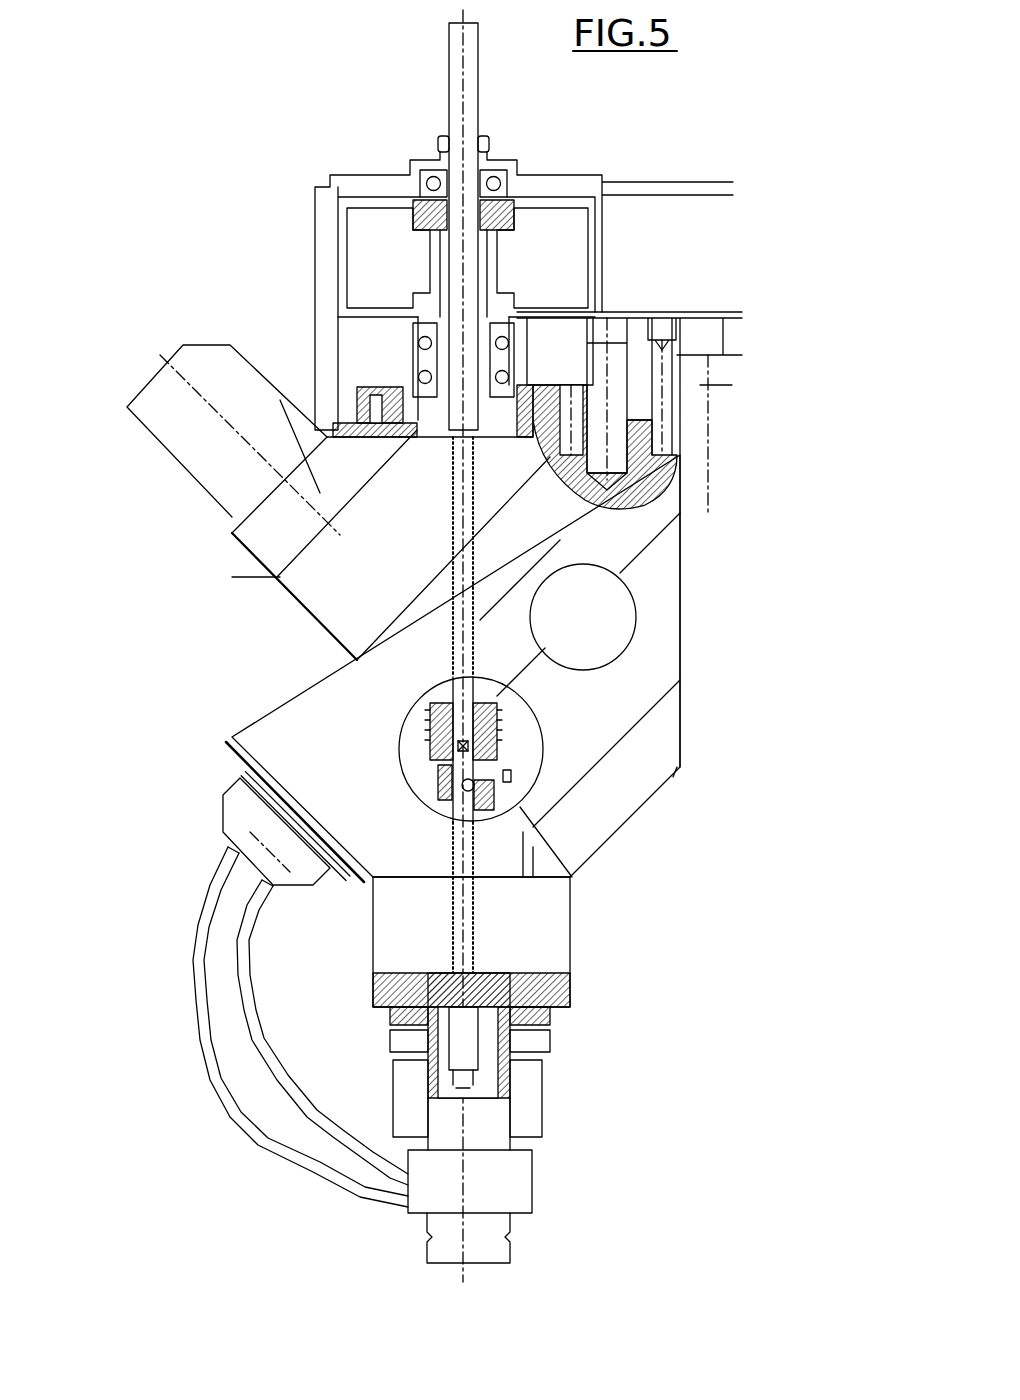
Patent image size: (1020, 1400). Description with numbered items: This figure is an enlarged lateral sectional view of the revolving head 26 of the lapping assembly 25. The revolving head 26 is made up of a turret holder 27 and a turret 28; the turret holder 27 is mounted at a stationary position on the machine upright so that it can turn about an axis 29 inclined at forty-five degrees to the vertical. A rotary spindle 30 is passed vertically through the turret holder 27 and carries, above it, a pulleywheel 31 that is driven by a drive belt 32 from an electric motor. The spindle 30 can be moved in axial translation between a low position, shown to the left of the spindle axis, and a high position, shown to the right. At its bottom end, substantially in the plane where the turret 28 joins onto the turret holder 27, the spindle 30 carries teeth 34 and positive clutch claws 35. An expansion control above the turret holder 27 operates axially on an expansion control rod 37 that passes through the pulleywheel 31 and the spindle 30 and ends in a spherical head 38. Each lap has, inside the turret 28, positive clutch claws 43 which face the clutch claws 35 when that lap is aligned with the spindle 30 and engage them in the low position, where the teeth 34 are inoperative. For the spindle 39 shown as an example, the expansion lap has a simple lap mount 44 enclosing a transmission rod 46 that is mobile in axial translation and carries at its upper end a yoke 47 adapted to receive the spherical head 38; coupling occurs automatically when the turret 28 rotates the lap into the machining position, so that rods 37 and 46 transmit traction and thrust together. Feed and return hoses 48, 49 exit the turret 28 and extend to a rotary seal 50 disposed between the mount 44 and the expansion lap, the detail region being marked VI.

The lapping assembly 25 is at (298, 155).
The revolving head 26 is at (317, 915).
The turret holder 27 is at (320, 490).
The turret 28 is at (283, 693).
The axis 29 is at (260, 847).
The rotary spindle 30 is at (360, 668).
The pulleywheel 31 is at (372, 283).
The drive belt 32 is at (663, 222).
The teeth 34 is at (333, 767).
The positive clutch claws 35 is at (523, 757).
The expansion control rod 37 is at (460, 110).
The spherical head 38 is at (360, 807).
The spindle 39 is at (572, 943).
The positive clutch claws 43 is at (510, 787).
The lap mount 44 is at (525, 948).
The transmission rod 46 is at (473, 1018).
The yoke 47 is at (517, 810).
The feed hose 48 is at (223, 1087).
The return hose 49 is at (303, 1115).
The rotary seal 50 is at (507, 1197).
The detail circle VI is at (553, 730).